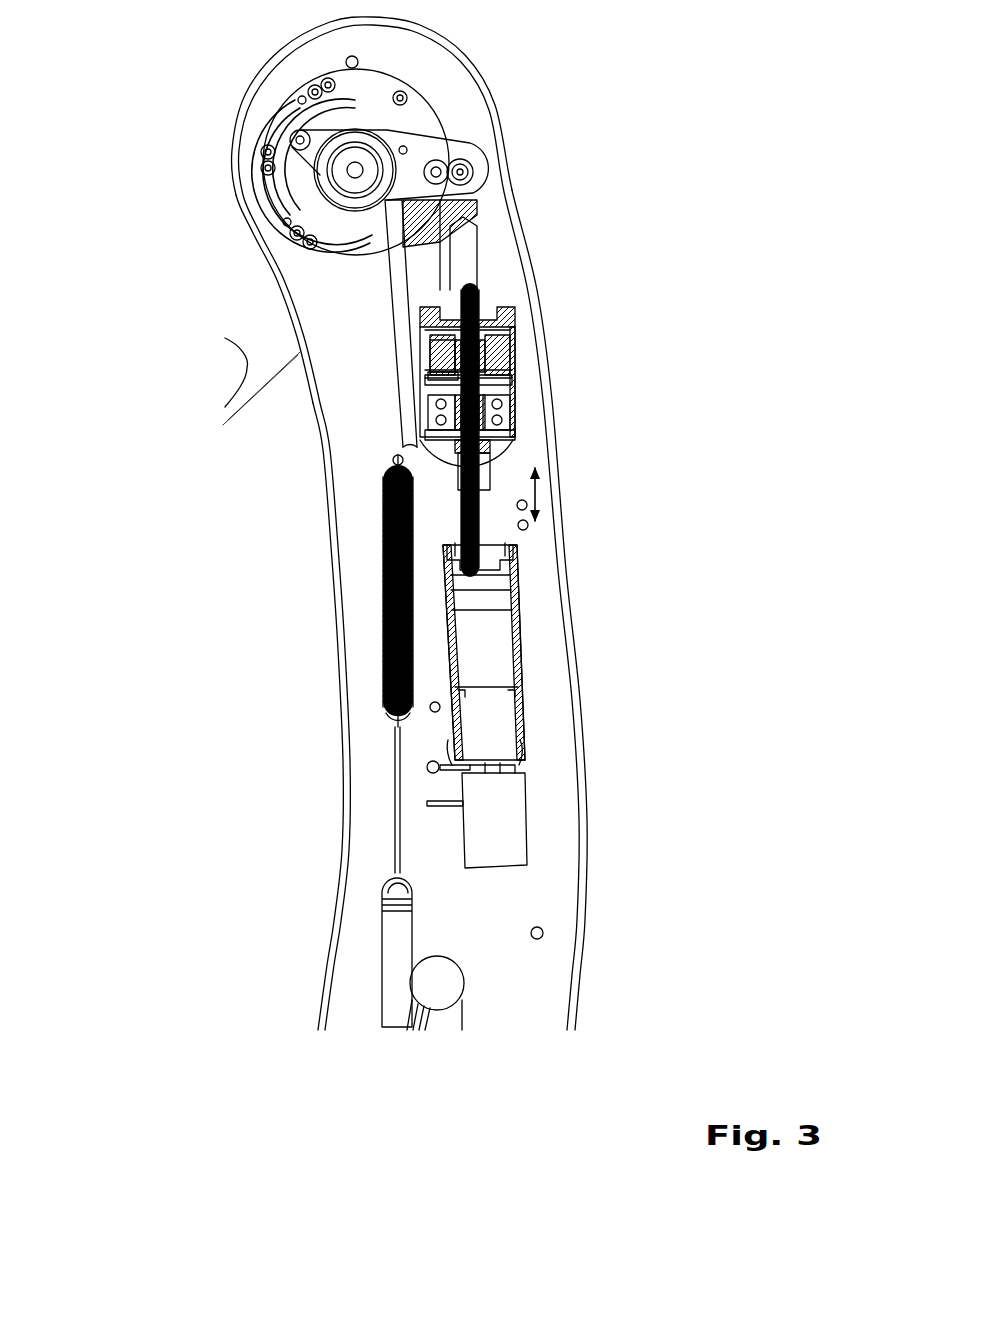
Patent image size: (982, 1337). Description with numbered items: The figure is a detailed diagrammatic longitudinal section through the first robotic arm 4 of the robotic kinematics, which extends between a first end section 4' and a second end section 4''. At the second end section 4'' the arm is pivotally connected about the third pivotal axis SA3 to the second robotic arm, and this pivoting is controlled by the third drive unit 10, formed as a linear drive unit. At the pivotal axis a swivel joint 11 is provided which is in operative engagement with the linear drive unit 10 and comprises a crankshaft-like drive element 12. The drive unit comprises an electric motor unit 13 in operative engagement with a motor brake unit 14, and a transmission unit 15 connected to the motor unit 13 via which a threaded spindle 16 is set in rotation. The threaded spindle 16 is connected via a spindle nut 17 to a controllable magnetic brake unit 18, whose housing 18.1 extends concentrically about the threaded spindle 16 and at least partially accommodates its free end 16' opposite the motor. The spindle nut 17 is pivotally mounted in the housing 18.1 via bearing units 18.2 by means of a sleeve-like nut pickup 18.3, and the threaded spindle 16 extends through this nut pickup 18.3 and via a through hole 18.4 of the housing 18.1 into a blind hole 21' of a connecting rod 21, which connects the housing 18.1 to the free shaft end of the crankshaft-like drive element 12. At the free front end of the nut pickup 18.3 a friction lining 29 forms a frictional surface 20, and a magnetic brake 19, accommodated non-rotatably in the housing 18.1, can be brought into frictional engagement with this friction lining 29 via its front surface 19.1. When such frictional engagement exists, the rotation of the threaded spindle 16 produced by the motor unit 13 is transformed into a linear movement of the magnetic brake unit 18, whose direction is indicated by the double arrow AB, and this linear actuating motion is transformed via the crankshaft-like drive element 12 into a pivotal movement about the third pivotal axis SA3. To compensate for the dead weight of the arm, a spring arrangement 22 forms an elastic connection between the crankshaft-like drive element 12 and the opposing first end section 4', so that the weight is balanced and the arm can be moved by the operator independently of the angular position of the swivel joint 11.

The first robotic arm 4 is at (524, 527).
The first end section 4' is at (264, 723).
The second end section 4'' is at (466, 106).
The third drive unit 10 is at (553, 773).
The swivel joint 11 is at (460, 100).
The crankshaft-like drive element 12 is at (478, 170).
The electric motor unit 13 is at (503, 725).
The motor brake unit 14 is at (507, 832).
The transmission unit 15 is at (493, 653).
The threaded spindle 16 is at (562, 429).
The free end of the threaded spindle 16' is at (615, 252).
The spindle nut 17 is at (480, 473).
The magnetic brake unit 18 is at (562, 327).
The housing 18.1 is at (436, 384).
The bearing units 18.2 is at (513, 410).
The nut pickup 18.3 is at (513, 443).
The through hole 18.4 is at (508, 357).
The magnetic brake 19 is at (440, 353).
The front surface 19.1 is at (440, 378).
The frictional surface 20 is at (430, 375).
The connecting rod 21 is at (261, 332).
The blind hole 21' is at (522, 251).
The spring arrangement 22 is at (364, 625).
The friction lining 29 is at (507, 378).
The third pivotal axis SA3 is at (355, 170).
The direction of movement AB is at (572, 494).